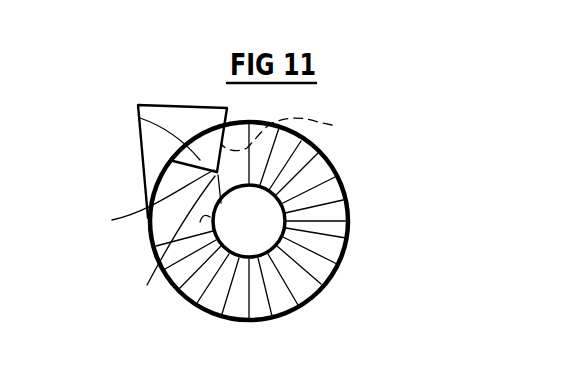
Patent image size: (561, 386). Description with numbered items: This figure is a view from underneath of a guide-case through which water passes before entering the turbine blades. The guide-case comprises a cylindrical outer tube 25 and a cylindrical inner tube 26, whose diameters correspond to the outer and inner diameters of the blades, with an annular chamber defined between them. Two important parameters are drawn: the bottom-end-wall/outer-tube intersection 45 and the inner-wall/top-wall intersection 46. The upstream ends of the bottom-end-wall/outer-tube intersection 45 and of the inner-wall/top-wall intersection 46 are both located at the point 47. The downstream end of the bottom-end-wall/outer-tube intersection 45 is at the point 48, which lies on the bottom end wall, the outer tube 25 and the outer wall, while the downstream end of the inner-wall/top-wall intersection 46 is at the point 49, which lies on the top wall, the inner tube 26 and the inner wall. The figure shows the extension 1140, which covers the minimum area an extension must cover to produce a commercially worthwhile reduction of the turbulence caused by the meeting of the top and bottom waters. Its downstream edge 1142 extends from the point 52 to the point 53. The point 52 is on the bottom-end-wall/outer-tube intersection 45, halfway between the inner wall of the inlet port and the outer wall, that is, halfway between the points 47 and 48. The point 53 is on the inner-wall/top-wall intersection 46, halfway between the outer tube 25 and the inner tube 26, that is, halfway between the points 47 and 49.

The outer tube 25 is at (342, 256).
The inner tube 26 is at (250, 259).
The point 47 is at (216, 138).
The extension 1140 is at (140, 118).
The downstream edge 1142 is at (138, 201).
The point 52 is at (173, 162).
The bottom-end-wall/outer-tube intersection 45 is at (212, 162).
The inner-wall/top-wall intersection 46 is at (289, 131).
The point 48 is at (148, 224).
The point 53 is at (147, 285).
The point 49 is at (200, 222).